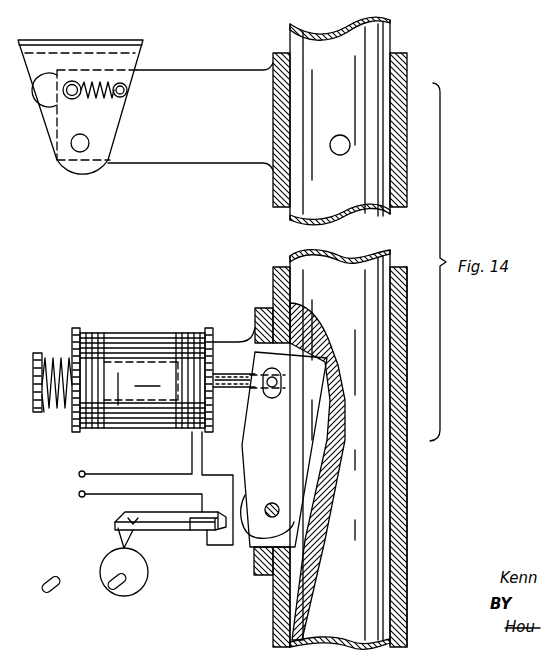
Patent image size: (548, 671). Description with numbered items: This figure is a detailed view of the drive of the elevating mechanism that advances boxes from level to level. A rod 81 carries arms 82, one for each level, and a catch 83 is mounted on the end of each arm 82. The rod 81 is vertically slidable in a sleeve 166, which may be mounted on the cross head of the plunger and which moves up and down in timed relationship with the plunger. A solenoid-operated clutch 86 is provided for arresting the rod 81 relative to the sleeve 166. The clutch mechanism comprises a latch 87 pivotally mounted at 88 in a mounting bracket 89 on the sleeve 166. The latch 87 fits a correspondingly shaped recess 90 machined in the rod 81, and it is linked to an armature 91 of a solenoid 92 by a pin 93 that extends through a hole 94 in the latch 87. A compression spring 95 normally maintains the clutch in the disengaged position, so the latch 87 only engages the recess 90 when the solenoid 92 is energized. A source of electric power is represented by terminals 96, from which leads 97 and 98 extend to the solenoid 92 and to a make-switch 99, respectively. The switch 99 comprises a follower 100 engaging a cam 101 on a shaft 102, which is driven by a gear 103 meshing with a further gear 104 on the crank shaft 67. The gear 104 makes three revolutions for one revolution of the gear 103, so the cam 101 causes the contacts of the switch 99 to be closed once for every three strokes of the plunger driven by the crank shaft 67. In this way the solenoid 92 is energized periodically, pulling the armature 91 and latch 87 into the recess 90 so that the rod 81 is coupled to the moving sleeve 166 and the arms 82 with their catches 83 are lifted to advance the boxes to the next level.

The rod 81 is at (343, 82).
The arm 82 is at (198, 127).
The catch 83 is at (135, 46).
The solenoid-operated clutch 86 is at (232, 325).
The latch 87 is at (283, 444).
The pivot 88 is at (280, 502).
The mounting bracket 89 is at (263, 577).
The recess 90 is at (318, 440).
The armature 91 is at (38, 352).
The solenoid 92 is at (122, 332).
The pin 93 is at (277, 380).
The hole 94 is at (275, 398).
The compression spring 95 is at (50, 415).
The terminals 96 is at (78, 493).
The lead 97 is at (125, 474).
The lead 98 is at (122, 497).
The make-switch 99 is at (200, 530).
The follower 100 is at (116, 542).
The cam 101 is at (136, 582).
The shaft 102 is at (110, 590).
The gear 103 is at (140, 604).
The gear 104 is at (52, 562).
The crank shaft 67 is at (45, 592).
The sleeve 166 is at (408, 494).